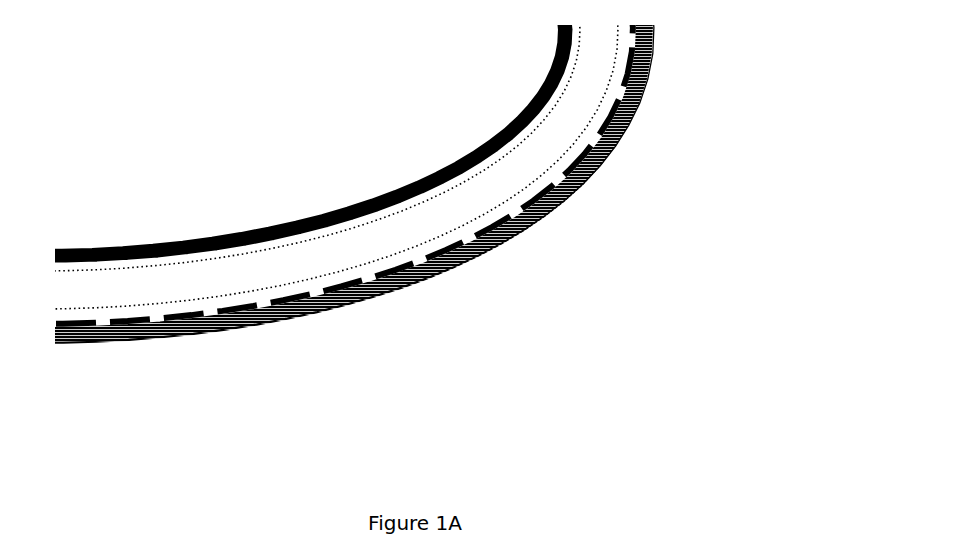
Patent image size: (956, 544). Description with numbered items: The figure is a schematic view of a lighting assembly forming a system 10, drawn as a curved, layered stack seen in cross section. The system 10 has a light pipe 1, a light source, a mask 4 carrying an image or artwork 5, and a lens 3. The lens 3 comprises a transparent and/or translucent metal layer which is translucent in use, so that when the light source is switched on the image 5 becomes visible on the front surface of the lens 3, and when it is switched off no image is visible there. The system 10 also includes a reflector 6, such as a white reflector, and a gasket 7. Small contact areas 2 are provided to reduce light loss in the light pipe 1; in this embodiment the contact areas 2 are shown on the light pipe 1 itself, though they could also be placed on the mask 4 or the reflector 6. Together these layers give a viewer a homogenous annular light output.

The system 10 is at (730, 195).
The light pipe 1 is at (468, 193).
The contact areas 2 is at (553, 100).
The lens 3 is at (360, 293).
The mask 4 is at (192, 313).
The image 5 is at (78, 325).
The reflector 6 is at (554, 71).
The gasket 7 is at (323, 213).